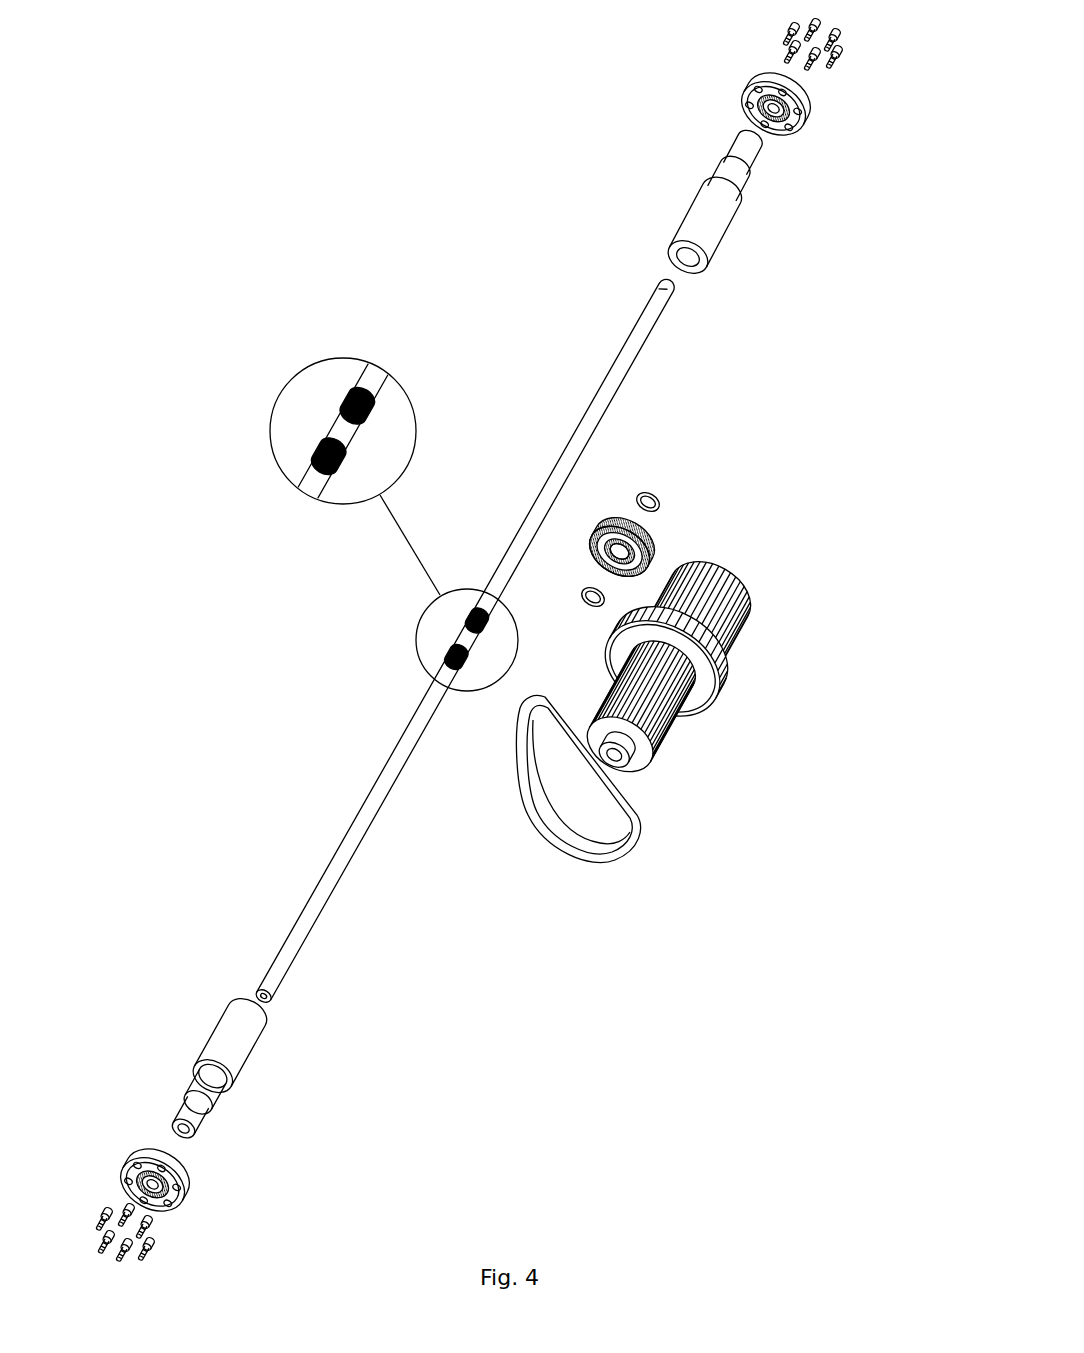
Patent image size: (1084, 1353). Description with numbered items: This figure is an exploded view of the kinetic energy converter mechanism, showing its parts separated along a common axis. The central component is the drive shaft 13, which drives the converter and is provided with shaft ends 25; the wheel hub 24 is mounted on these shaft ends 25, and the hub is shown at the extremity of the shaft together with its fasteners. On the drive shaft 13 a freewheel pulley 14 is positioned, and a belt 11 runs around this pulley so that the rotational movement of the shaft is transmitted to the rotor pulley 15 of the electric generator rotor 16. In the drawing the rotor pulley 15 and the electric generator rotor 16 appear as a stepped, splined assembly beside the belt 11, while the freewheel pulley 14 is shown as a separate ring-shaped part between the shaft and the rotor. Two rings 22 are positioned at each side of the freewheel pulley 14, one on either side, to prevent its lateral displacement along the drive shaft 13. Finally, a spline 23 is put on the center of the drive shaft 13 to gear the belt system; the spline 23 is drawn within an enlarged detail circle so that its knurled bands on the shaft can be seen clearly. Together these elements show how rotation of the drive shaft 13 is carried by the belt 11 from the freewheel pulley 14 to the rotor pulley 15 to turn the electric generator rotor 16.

The belt 11 is at (637, 820).
The drive shaft 13 is at (632, 348).
The freewheel pulley 14 is at (595, 525).
The rotor pulley 15 is at (720, 690).
The electric generator rotor 16 is at (683, 720).
The rings 22 is at (640, 497).
The spline 23 is at (468, 645).
The wheel hub 24 is at (805, 100).
The shaft ends 25 is at (710, 218).